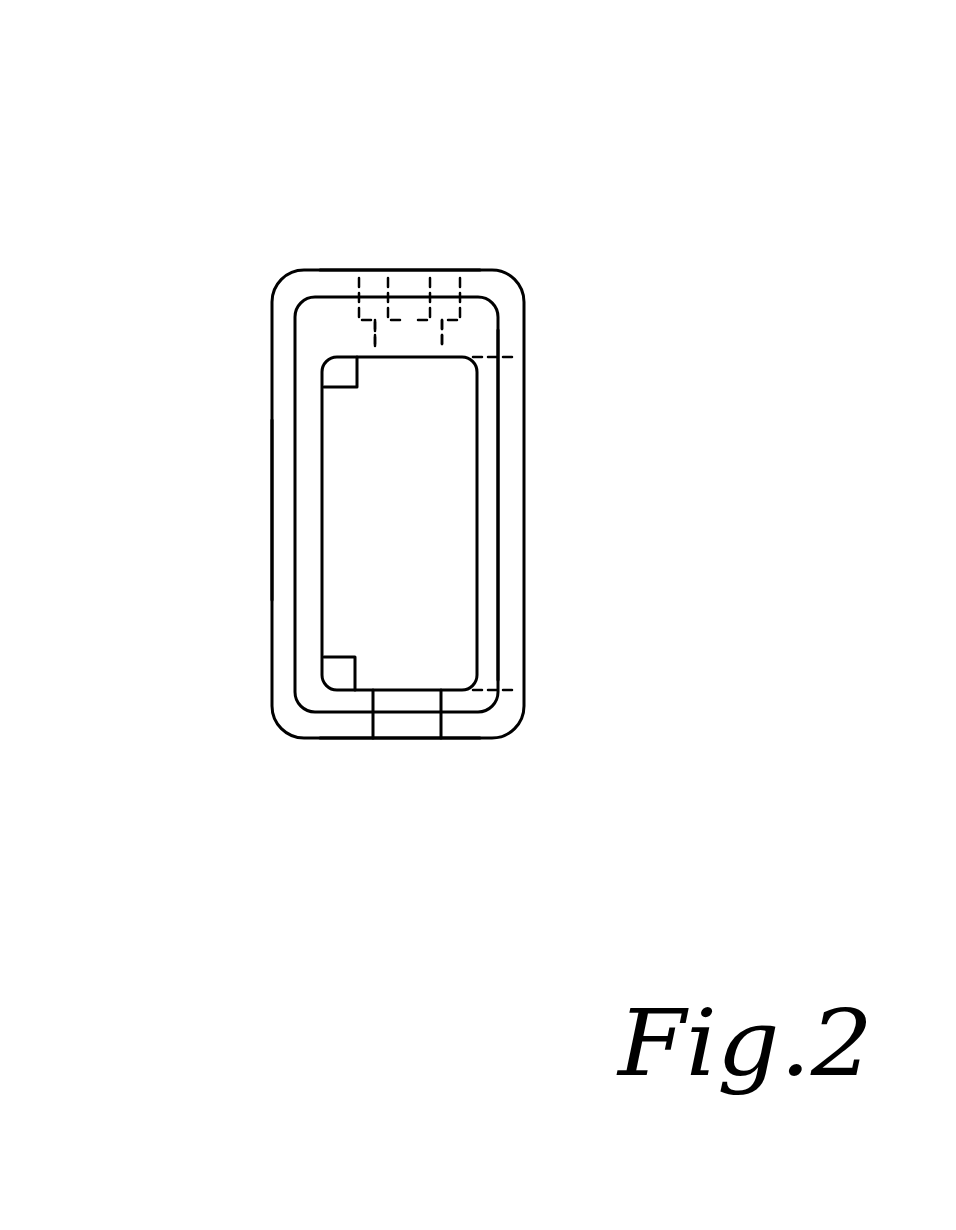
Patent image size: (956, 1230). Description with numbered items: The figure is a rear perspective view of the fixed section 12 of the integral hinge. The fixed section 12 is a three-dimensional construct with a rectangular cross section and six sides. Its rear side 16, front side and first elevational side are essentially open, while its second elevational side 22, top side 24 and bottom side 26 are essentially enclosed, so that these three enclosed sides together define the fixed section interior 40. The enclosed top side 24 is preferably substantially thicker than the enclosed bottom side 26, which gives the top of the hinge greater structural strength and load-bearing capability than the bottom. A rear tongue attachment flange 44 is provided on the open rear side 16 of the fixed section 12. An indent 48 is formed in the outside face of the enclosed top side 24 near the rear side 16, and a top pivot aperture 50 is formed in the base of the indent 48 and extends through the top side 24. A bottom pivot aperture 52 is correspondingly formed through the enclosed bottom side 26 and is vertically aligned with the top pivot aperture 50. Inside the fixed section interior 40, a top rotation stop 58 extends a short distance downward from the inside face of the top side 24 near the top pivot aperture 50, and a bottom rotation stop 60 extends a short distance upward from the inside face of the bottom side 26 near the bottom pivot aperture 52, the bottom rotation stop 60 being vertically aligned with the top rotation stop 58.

The fixed section 12 is at (268, 377).
The rear side 16 is at (512, 397).
The second elevational side 22 is at (270, 505).
The top side 24 is at (340, 270).
The bottom side 26 is at (323, 740).
The fixed section interior 40 is at (385, 553).
The rear tongue attachment flange 44 is at (497, 483).
The indent 48 is at (433, 270).
The top pivot aperture 50 is at (423, 345).
The bottom pivot aperture 52 is at (423, 727).
The top rotation stop 58 is at (338, 375).
The bottom rotation stop 60 is at (338, 672).